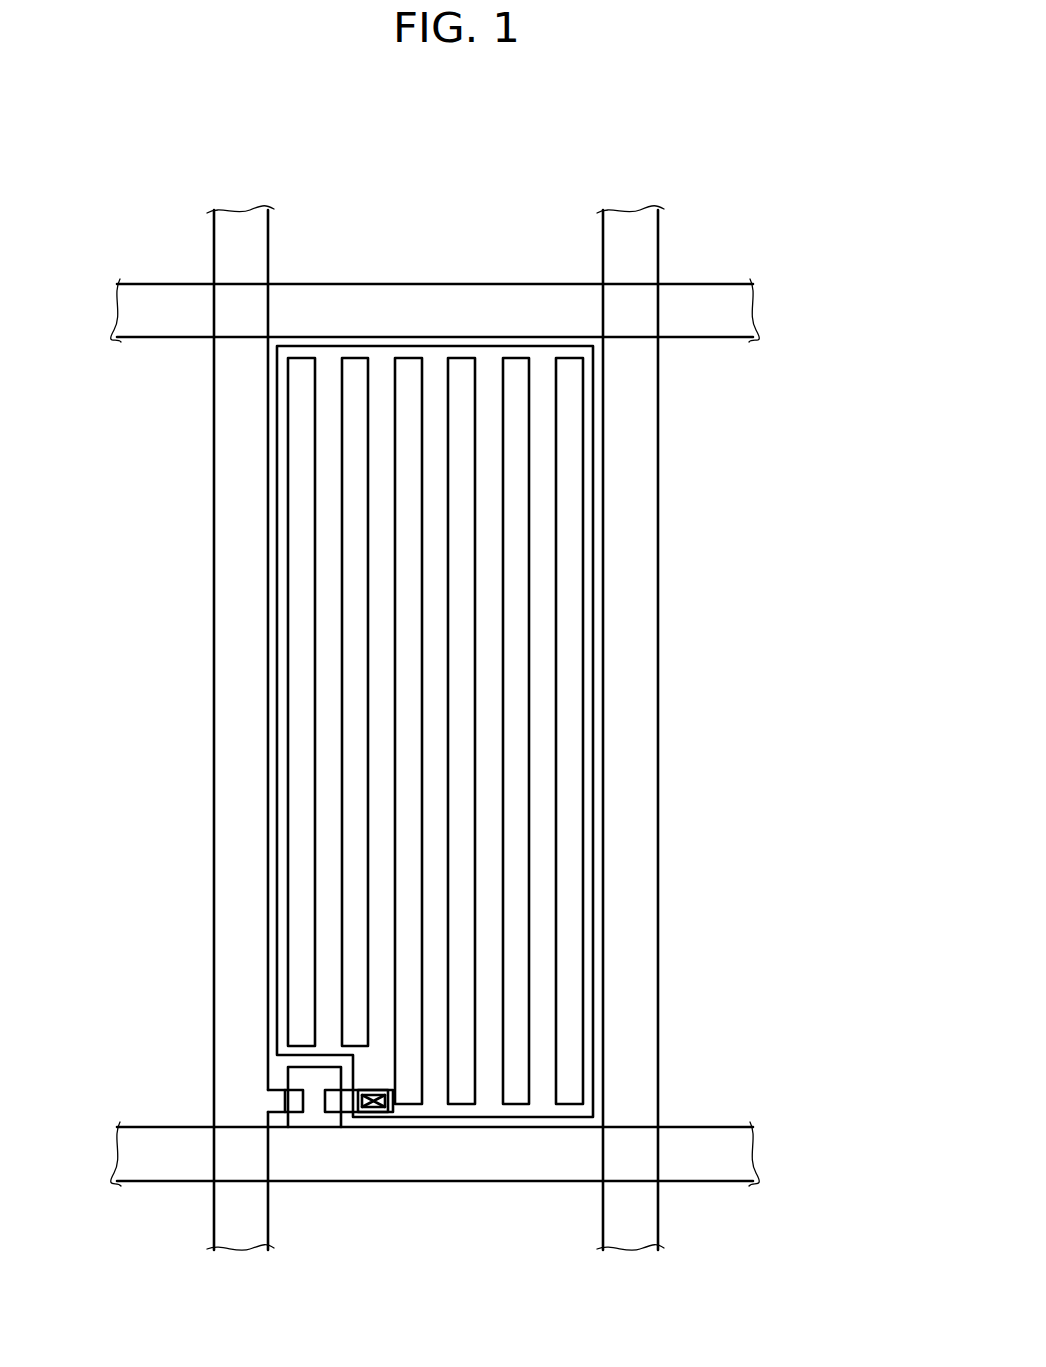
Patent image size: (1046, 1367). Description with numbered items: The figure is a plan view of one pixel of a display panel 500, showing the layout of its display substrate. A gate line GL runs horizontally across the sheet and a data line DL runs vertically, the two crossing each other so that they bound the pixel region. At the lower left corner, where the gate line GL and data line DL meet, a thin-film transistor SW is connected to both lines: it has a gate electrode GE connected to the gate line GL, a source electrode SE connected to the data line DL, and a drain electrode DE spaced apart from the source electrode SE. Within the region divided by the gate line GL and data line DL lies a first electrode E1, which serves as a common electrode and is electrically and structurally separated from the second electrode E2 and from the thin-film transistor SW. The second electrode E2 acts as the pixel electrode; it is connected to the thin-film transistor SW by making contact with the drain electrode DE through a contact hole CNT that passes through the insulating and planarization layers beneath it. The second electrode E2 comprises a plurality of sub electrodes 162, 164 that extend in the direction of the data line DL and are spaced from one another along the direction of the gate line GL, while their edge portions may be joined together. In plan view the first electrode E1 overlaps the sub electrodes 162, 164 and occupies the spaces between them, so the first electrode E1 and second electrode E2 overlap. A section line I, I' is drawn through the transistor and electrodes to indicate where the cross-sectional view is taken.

The display panel 500 is at (677, 168).
The data line DL is at (657, 935).
The gate line GL is at (693, 1130).
The first electrode E1 is at (569, 789).
The second electrode E2 is at (537, 731).
The sub electrode 162 is at (487, 492).
The sub electrode 164 is at (545, 548).
The thin-film transistor SW is at (350, 1171).
The gate electrode GE is at (313, 1102).
The source electrode SE is at (281, 1102).
The drain electrode DE is at (333, 1103).
The contact hole CNT is at (378, 1105).
The section line start I is at (363, 1098).
The section line end I' is at (694, 1025).